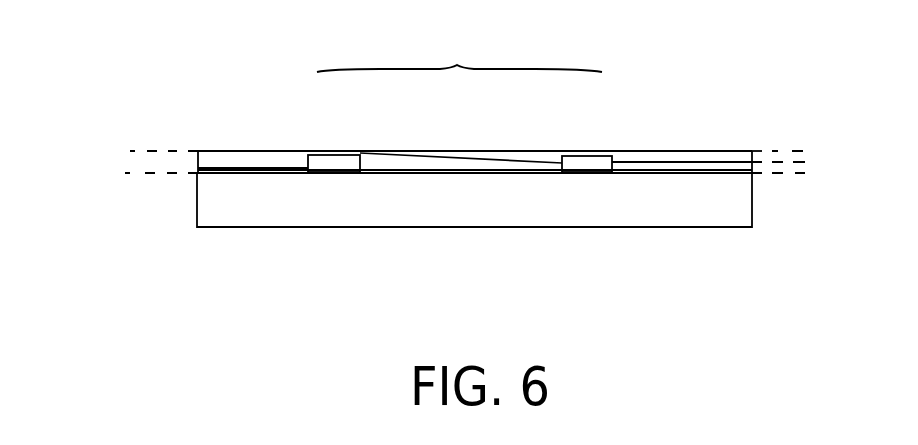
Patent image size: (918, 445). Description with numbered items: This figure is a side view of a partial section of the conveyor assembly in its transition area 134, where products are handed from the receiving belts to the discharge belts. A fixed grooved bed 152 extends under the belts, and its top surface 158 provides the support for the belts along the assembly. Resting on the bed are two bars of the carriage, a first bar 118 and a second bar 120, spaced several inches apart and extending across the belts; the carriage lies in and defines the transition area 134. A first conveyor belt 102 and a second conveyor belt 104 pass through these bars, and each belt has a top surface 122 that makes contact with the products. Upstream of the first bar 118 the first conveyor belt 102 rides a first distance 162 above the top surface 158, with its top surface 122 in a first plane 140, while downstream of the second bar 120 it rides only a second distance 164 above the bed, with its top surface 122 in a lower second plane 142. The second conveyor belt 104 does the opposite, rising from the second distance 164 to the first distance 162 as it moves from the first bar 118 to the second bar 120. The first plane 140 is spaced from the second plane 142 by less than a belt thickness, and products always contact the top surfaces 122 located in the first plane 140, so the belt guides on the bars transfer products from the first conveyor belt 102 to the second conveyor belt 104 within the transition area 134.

The first conveyor belt 102 is at (240, 160).
The second conveyor belt 104 is at (718, 158).
The first bar 118 is at (333, 170).
The second bar 120 is at (583, 168).
The top surface 122 is at (260, 149).
The transition area 134 is at (459, 51).
The first plane 140 is at (772, 150).
The second plane 142 is at (757, 160).
The grooved bed 152 is at (670, 202).
The top surface 158 is at (382, 173).
The first distance 162 is at (127, 160).
The second distance 164 is at (798, 167).